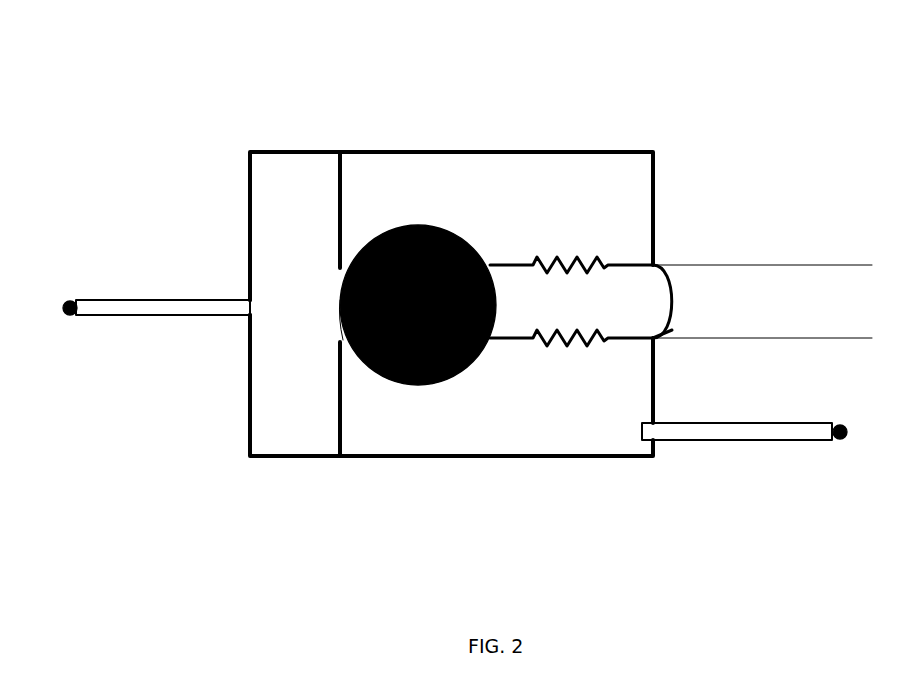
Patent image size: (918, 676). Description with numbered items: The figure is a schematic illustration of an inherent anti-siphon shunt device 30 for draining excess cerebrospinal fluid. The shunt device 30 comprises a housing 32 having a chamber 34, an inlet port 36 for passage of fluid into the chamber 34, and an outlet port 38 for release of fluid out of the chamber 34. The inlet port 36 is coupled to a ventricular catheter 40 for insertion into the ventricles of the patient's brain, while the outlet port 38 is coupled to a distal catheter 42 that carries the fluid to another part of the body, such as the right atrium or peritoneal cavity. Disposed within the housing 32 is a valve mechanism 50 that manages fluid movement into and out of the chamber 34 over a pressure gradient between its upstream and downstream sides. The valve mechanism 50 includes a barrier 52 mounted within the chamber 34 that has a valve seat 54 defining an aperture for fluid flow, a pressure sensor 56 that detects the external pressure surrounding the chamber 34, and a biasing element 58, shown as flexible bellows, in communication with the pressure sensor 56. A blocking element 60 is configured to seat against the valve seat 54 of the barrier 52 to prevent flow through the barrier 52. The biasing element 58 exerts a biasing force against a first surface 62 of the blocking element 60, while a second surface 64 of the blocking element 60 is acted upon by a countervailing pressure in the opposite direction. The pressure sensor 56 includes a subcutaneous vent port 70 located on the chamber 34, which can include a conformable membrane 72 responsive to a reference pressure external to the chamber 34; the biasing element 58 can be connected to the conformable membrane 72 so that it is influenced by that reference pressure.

The shunt device 30 is at (513, 235).
The housing 32 is at (442, 167).
The chamber 34 is at (496, 304).
The inlet port 36 is at (243, 300).
The outlet port 38 is at (660, 422).
The ventricular catheter 40 is at (87, 289).
The distal catheter 42 is at (815, 473).
The valve mechanism 50 is at (527, 210).
The barrier 52 is at (337, 205).
The valve seat 54 is at (303, 363).
The pressure sensor 56 is at (748, 249).
The biasing element 58 is at (570, 346).
The blocking element 60 is at (393, 378).
The first surface 62 is at (497, 312).
The second surface 64 is at (338, 318).
The subcutaneous vent port 70 is at (658, 277).
The conformable membrane 72 is at (665, 336).